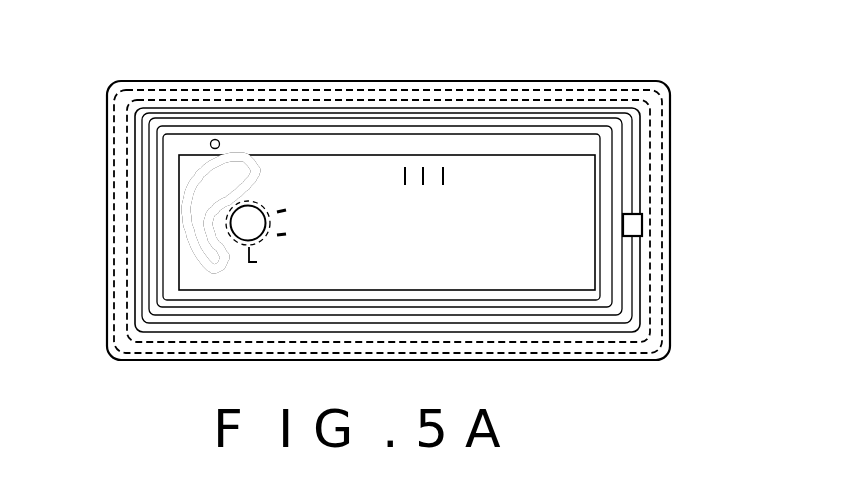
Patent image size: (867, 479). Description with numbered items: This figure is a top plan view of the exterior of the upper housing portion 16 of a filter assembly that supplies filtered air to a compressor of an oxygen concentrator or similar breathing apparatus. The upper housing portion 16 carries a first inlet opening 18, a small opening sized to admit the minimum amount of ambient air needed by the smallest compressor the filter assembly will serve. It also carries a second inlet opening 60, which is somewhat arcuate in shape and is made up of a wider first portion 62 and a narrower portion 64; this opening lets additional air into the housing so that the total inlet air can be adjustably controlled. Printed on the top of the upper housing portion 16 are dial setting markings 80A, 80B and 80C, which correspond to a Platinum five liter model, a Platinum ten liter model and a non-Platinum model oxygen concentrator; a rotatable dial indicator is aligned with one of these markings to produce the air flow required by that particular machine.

The upper housing portion 16 is at (666, 70).
The first inlet opening 18 is at (633, 227).
The second inlet opening 60 is at (163, 219).
The first portion 62 is at (190, 180).
The narrower portion 64 is at (203, 258).
The dial setting marking 80A is at (249, 262).
The dial setting marking 80B is at (280, 234).
The dial setting marking 80C is at (277, 211).